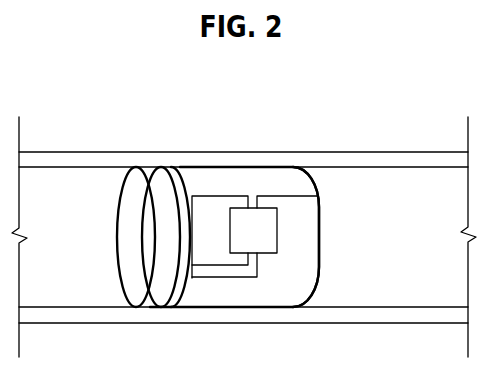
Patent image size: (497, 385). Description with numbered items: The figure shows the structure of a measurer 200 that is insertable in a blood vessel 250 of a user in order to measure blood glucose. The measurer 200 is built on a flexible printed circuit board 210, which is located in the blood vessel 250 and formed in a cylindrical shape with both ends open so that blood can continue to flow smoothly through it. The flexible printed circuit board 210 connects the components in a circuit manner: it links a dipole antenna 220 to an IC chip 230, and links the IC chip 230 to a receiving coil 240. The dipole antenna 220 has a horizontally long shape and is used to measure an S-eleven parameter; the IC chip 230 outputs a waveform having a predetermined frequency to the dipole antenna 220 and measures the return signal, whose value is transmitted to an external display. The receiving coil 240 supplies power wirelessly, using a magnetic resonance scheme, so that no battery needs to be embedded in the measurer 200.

The measurer 200 is at (303, 248).
The flexible printed circuit board 210 is at (290, 167).
The dipole antenna 220 is at (207, 196).
The IC chip 230 is at (268, 255).
The receiving coil 240 is at (127, 297).
The blood vessel 250 is at (320, 323).